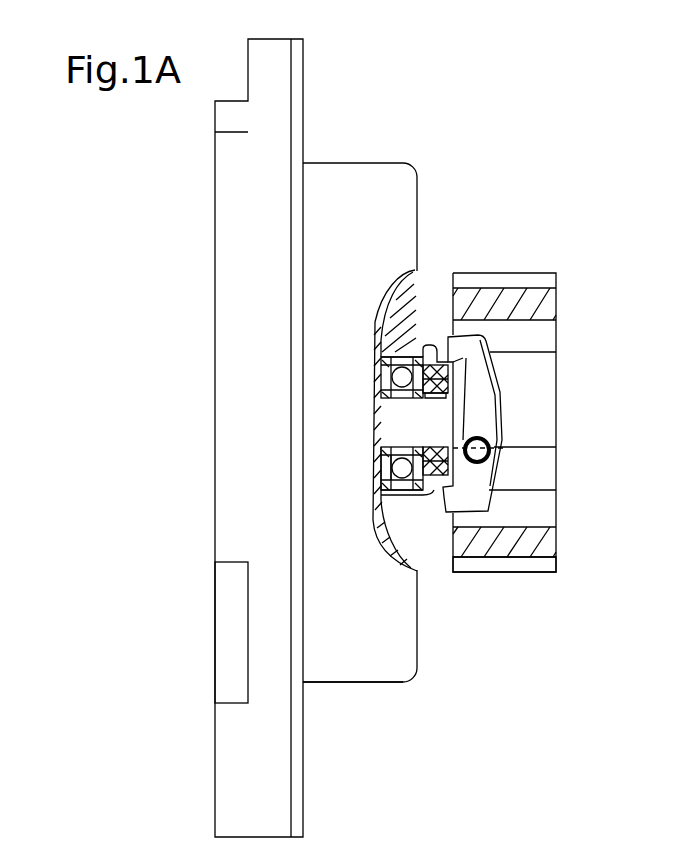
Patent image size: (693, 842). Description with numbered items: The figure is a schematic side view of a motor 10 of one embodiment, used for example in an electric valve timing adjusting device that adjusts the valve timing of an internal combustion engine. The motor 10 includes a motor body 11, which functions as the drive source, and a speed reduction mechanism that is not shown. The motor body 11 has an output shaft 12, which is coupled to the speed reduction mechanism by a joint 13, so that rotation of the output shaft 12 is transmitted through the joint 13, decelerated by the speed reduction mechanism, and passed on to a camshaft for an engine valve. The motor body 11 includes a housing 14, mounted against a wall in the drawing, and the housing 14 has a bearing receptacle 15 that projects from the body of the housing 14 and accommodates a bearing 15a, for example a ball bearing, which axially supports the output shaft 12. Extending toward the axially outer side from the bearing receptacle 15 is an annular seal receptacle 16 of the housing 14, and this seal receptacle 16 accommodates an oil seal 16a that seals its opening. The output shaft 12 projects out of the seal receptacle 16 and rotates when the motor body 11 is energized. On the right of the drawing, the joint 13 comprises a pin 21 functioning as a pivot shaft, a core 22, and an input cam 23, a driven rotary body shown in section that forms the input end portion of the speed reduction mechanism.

The motor 10 is at (504, 174).
The motor body 11 is at (367, 163).
The output shaft 12 is at (455, 398).
The joint 13 is at (568, 329).
The housing 14 is at (362, 667).
The bearing receptacle 15 is at (408, 494).
The bearing 15a is at (378, 478).
The seal receptacle 16 is at (440, 362).
The oil seal 16a is at (433, 398).
The pin 21 is at (497, 462).
The core 22 is at (493, 460).
The input cam 23 is at (503, 572).